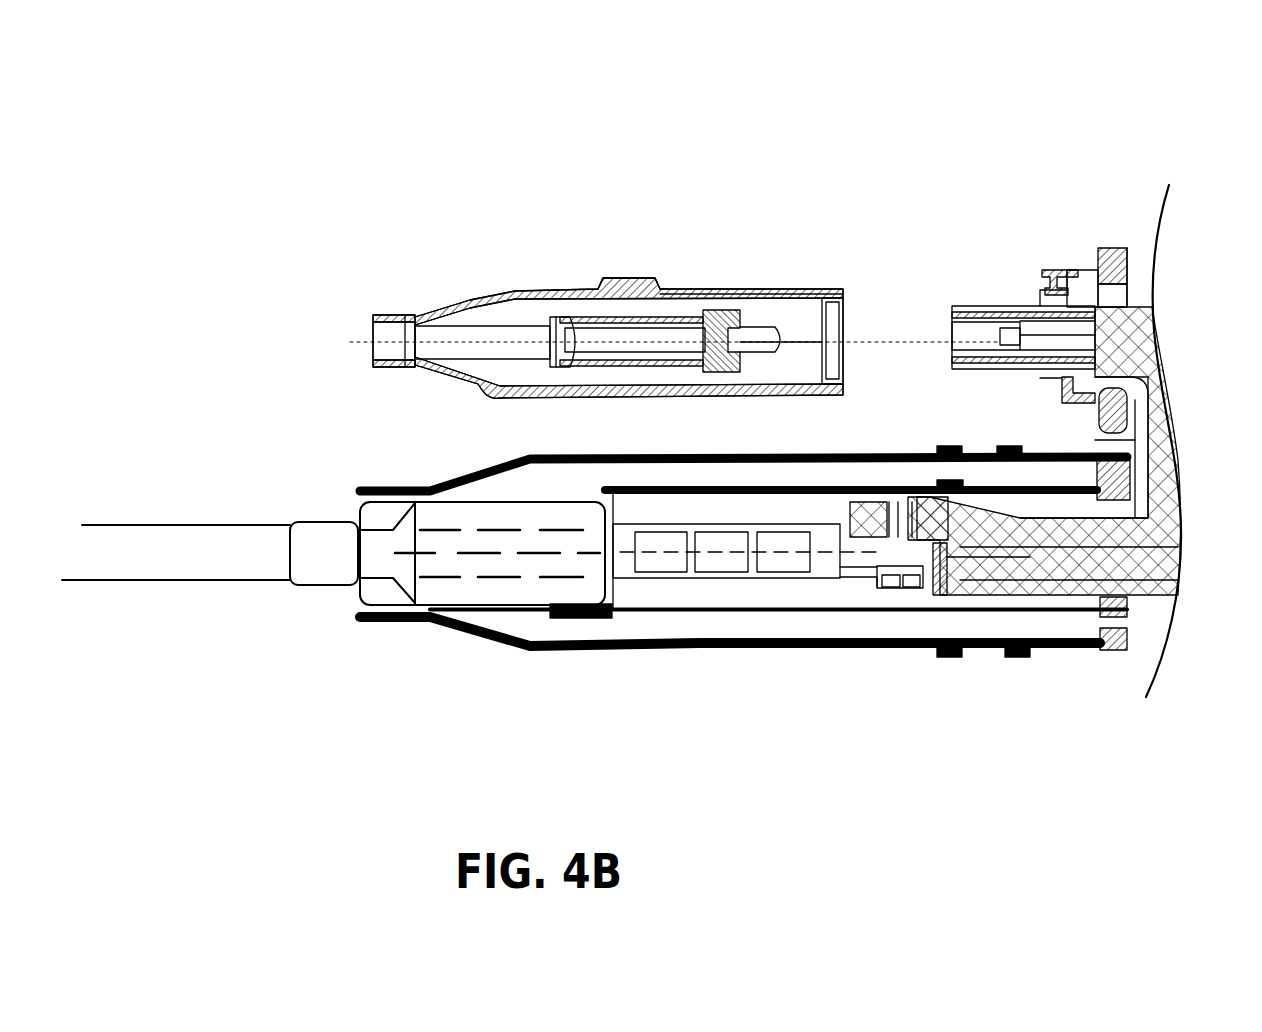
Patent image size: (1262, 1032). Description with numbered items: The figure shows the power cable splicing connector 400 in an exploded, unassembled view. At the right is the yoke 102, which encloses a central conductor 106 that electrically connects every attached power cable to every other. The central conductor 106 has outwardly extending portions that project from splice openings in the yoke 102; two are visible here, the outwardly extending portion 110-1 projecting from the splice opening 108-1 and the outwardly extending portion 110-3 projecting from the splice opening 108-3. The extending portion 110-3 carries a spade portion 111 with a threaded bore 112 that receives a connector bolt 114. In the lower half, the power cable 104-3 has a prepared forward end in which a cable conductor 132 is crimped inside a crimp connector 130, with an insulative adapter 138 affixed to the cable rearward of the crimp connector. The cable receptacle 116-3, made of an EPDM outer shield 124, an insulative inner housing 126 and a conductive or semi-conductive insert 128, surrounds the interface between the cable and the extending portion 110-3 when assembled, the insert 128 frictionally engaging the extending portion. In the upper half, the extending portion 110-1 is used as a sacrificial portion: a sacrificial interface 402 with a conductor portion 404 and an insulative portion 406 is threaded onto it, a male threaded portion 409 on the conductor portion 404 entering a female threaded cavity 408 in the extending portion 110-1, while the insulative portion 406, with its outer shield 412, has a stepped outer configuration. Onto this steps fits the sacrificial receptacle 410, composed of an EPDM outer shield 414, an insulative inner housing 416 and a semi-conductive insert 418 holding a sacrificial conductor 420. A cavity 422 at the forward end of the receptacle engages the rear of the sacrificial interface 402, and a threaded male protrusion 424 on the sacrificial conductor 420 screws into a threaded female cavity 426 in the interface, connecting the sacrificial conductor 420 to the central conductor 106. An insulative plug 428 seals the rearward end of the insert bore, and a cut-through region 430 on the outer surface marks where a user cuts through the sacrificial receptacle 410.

The yoke 102 is at (1180, 382).
The power cable 104-3 is at (233, 603).
The central conductor 106 is at (1162, 536).
The splice opening 108-1 is at (1105, 296).
The splice opening 108-3 is at (1022, 597).
The outwardly extending portion 110-1 is at (1127, 313).
The outwardly extending portion 110-3 is at (958, 565).
The spade portion 111 is at (873, 520).
The threaded bore 112 is at (897, 537).
The connector bolt 114 is at (895, 583).
The cable receptacle 116-3 is at (607, 657).
The outer shield 124 is at (543, 652).
The insulative inner housing 126 is at (655, 478).
The insert 128 is at (702, 492).
The crimp connector 130 is at (685, 568).
The cable conductor 132 is at (518, 497).
The adapter 138 is at (423, 490).
The power cable splicing connector 400 is at (845, 193).
The sacrificial interface 402 is at (1085, 288).
The conductor portion 404 is at (1031, 345).
The insulative portion 406 is at (1036, 365).
The female threaded cavity 408 is at (1113, 338).
The male threaded portion 409 is at (1110, 340).
The sacrificial receptacle 410 is at (468, 289).
The outer shield 412 is at (1085, 288).
The outer shield 414 is at (703, 296).
The insulative inner housing 416 is at (520, 313).
The semi-conductive insert 418 is at (683, 343).
The sacrificial conductor 420 is at (661, 346).
The cavity 422 is at (803, 326).
The threaded male protrusion 424 is at (770, 345).
The threaded female cavity 426 is at (979, 348).
The insulative plug 428 is at (385, 357).
The cut-through region 430 is at (626, 272).